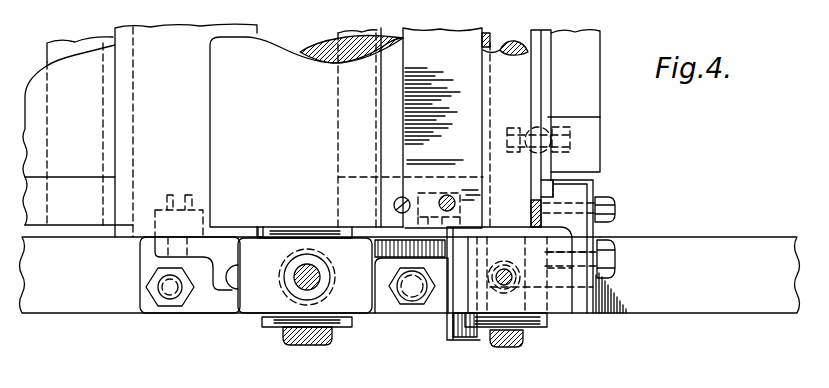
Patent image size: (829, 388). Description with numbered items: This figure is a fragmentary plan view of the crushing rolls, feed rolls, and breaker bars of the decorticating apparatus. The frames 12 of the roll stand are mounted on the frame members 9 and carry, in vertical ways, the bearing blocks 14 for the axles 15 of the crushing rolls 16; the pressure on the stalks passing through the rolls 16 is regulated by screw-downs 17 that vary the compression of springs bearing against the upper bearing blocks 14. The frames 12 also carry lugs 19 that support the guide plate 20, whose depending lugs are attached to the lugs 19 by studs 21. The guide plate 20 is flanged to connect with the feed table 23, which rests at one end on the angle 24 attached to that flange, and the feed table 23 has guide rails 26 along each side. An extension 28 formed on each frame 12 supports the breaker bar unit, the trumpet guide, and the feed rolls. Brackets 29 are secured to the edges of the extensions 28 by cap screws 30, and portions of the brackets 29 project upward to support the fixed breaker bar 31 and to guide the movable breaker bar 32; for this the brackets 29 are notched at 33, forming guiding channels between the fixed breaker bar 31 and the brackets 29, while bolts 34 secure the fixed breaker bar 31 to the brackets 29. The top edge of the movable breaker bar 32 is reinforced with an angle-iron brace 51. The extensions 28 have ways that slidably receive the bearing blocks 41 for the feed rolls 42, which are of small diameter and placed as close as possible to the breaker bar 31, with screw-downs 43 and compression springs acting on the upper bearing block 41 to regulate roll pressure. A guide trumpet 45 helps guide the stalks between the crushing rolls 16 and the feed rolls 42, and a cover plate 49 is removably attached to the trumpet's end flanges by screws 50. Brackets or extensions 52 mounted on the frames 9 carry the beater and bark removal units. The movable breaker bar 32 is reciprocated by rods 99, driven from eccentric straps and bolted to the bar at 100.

The frame members 9 is at (78, 305).
The frames 12 is at (257, 302).
The bearing blocks 14 is at (312, 230).
The axles 15 is at (300, 341).
The rolls 16 is at (286, 57).
The screw-downs 17 is at (295, 268).
The lugs 19 is at (160, 250).
The guide plate 20 is at (186, 130).
The studs 21 is at (180, 197).
The feed table 23 is at (40, 72).
The angle 24 is at (70, 50).
The guide rails 26 is at (70, 205).
The extension 28 is at (557, 308).
The brackets 29 is at (582, 305).
The cap screws 30 is at (616, 259).
The fixed breaker bar 31 is at (535, 88).
The movable breaker bar 32 is at (548, 117).
The notches 33 is at (557, 182).
The bolts 34 is at (616, 209).
The bearing blocks 41 is at (533, 330).
The feed rolls 42 is at (498, 50).
The screw-downs 43 is at (505, 262).
The guide trumpet 45 is at (353, 40).
The cover plate 49 is at (446, 128).
The screws 50 is at (447, 195).
The angle-iron brace 51 is at (587, 57).
The brackets or extensions 52 is at (715, 240).
The rods 99 is at (528, 128).
The bolt connection 100 is at (570, 137).